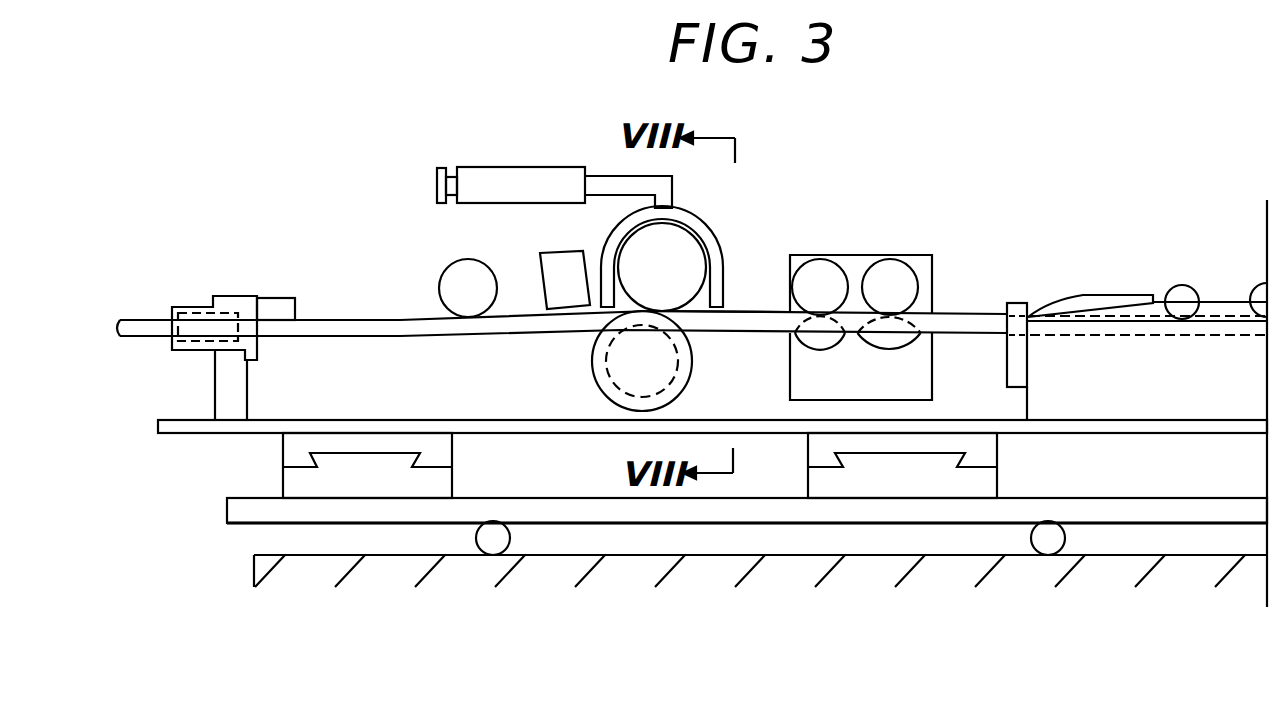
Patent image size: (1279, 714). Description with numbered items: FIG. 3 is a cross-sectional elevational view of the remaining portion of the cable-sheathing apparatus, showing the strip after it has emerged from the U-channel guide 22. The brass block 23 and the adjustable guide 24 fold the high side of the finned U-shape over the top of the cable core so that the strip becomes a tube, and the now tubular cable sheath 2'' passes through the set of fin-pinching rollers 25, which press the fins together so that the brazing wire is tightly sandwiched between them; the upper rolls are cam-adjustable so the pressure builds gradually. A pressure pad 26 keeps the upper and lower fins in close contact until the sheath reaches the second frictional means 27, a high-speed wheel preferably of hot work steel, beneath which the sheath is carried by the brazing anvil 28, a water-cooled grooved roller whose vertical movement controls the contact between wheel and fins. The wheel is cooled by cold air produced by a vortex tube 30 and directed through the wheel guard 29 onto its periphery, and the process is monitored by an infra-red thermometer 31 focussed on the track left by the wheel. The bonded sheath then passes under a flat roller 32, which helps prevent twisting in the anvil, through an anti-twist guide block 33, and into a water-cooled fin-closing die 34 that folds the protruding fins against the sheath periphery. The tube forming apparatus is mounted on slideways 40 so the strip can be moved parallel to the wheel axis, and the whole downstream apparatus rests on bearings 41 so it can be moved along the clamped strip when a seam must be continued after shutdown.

The cable sheath 2'' is at (562, 356).
The U-channel guide 22 is at (1220, 345).
The brass block 23 is at (1133, 298).
The adjustable guide 24 is at (1022, 303).
The fin-pinching rollers 25 is at (867, 260).
The pressure pad 26 is at (765, 305).
The second frictional means 27 is at (677, 267).
The brazing anvil 28 is at (683, 372).
The wheel guard 29 is at (708, 238).
The vortex tube 30 is at (542, 183).
The infra-red thermometer 31 is at (545, 270).
The flat roller 32 is at (452, 293).
The anti-twist guide block 33 is at (275, 308).
The fin-closing die 34 is at (180, 308).
The slideways 40 is at (453, 457).
The bearings 41 is at (493, 538).